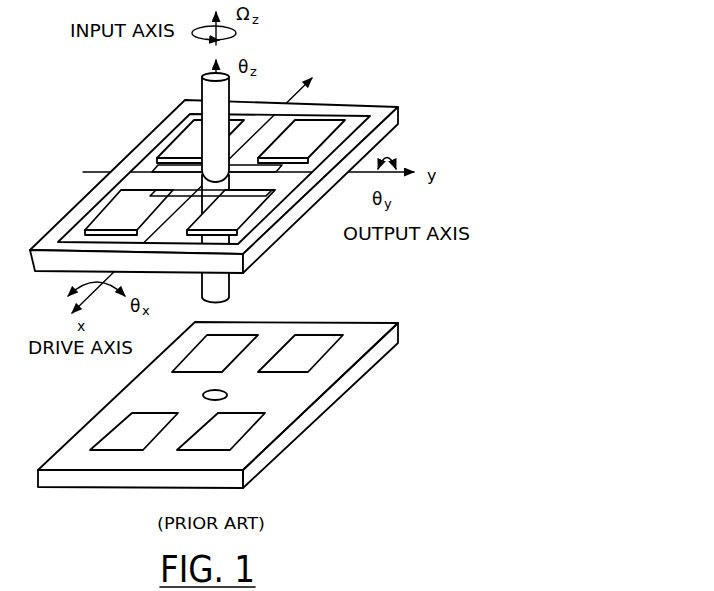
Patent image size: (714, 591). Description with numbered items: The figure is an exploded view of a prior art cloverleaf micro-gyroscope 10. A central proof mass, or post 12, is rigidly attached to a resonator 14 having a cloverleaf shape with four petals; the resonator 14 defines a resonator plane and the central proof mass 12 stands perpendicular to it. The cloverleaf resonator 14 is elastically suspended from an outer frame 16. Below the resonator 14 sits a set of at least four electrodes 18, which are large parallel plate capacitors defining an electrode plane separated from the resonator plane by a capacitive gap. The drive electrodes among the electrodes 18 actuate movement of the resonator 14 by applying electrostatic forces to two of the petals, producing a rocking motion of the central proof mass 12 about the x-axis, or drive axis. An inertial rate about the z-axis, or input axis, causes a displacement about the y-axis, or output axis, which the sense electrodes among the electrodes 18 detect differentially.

The micro-gyroscope 10 is at (363, 33).
The central proof mass 12 is at (203, 88).
The resonator 14 is at (208, 180).
The outer frame 16 is at (372, 103).
The electrodes 18 is at (392, 412).